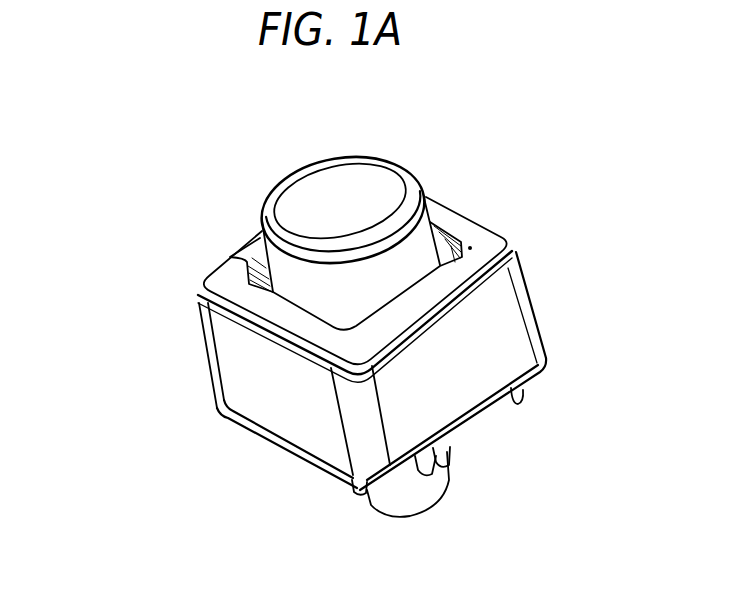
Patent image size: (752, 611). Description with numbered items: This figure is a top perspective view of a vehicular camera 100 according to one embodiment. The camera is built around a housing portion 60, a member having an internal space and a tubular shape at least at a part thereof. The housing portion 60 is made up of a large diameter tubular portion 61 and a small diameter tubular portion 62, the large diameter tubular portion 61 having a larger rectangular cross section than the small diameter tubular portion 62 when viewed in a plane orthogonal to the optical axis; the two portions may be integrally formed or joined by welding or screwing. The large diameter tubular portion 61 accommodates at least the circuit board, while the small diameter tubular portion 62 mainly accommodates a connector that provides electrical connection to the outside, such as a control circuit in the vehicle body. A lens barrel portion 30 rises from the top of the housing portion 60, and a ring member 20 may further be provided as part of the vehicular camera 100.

The vehicular camera 100 is at (478, 95).
The ring member 20 is at (502, 230).
The lens barrel portion 30 is at (278, 190).
The housing portion 60 is at (131, 382).
The large diameter tubular portion 61 is at (208, 360).
The small diameter tubular portion 62 is at (367, 505).